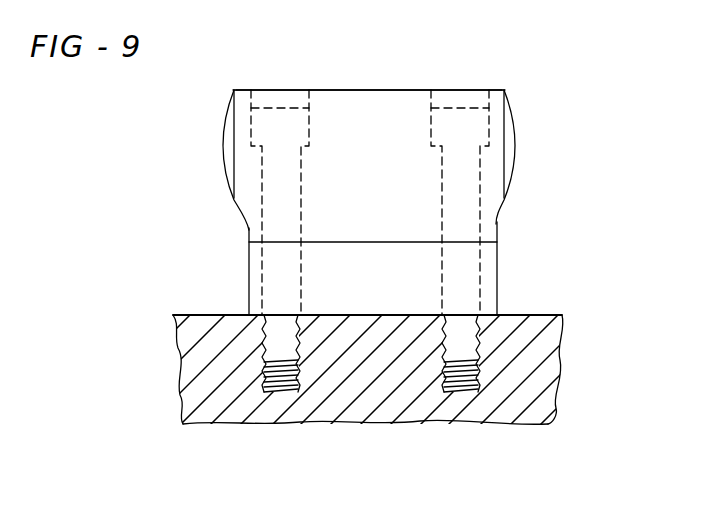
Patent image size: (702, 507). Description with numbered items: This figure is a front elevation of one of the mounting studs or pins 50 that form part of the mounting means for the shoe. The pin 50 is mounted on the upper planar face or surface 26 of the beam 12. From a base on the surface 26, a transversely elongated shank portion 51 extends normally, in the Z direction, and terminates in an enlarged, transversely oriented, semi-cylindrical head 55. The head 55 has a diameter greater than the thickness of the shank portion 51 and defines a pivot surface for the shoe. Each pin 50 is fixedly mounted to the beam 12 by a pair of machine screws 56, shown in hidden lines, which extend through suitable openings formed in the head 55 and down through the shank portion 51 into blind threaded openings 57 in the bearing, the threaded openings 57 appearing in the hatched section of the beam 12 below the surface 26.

The mounting stud or pin 50 is at (427, 88).
The semi-cylindrical head 55 is at (358, 97).
The shank portion 51 is at (499, 221).
The machine screws 56 is at (284, 102).
The upper planar face or surface 26 is at (518, 315).
The beam 12 is at (536, 379).
The blind threaded openings 57 is at (297, 389).